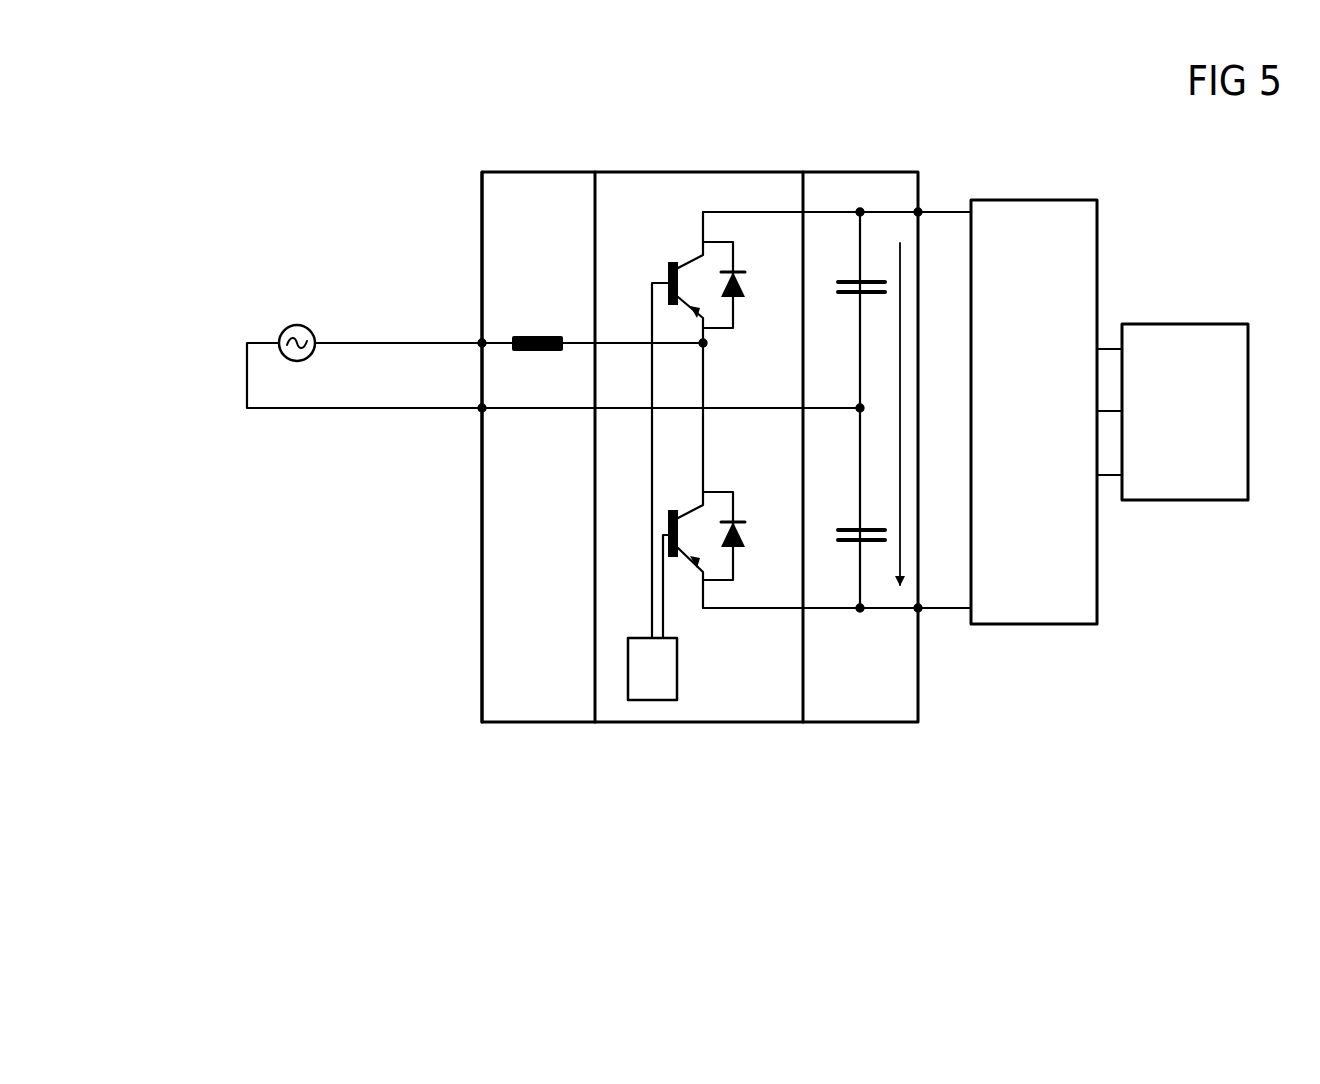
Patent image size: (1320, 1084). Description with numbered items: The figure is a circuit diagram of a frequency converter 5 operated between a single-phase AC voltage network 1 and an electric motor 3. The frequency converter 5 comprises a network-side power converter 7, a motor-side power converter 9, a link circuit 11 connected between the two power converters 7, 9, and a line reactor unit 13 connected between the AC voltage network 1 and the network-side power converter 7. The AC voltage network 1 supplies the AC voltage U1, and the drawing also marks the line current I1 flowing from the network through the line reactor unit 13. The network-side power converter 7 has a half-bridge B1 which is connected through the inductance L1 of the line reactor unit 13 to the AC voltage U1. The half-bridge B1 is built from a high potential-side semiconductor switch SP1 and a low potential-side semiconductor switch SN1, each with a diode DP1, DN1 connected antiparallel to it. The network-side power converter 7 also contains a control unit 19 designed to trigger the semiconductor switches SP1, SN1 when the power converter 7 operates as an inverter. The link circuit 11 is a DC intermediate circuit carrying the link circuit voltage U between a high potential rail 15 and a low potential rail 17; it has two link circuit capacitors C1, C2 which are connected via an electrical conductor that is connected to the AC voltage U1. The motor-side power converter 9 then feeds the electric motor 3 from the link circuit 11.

The AC voltage network 1 is at (320, 215).
The electric motor 3 is at (1184, 503).
The frequency converter 5 is at (915, 762).
The network-side power converter 7 is at (730, 724).
The motor-side power converter 9 is at (1037, 626).
The link circuit 11 is at (860, 724).
The line reactor unit 13 is at (540, 724).
The high potential rail 15 is at (773, 210).
The low potential rail 17 is at (827, 612).
The control unit 19 is at (655, 724).
The half-bridge B1 is at (700, 206).
The high potential-side semiconductor switch SP1 is at (668, 266).
The low potential-side semiconductor switch SN1 is at (668, 520).
The diode DP1 is at (746, 283).
The diode DN1 is at (746, 533).
The link circuit capacitor C1 is at (848, 300).
The link circuit capacitor C2 is at (850, 525).
The inductance L1 is at (525, 335).
The line current I1 is at (580, 341).
The AC voltage U1 is at (313, 312).